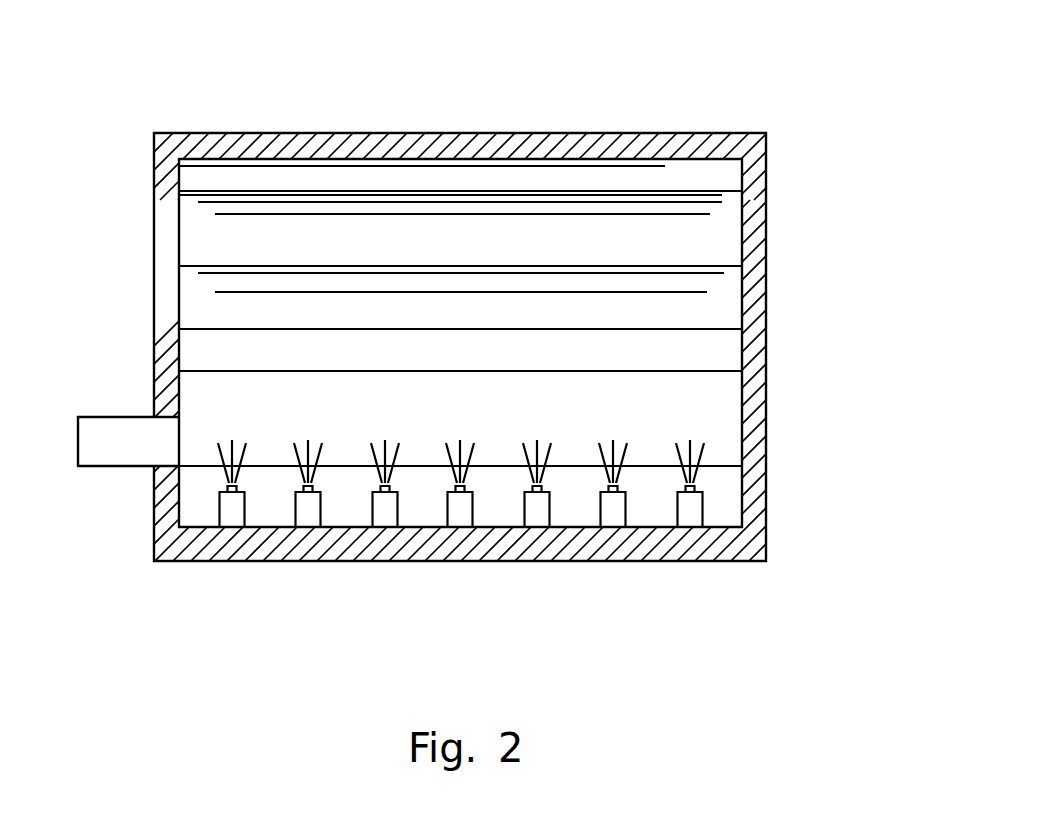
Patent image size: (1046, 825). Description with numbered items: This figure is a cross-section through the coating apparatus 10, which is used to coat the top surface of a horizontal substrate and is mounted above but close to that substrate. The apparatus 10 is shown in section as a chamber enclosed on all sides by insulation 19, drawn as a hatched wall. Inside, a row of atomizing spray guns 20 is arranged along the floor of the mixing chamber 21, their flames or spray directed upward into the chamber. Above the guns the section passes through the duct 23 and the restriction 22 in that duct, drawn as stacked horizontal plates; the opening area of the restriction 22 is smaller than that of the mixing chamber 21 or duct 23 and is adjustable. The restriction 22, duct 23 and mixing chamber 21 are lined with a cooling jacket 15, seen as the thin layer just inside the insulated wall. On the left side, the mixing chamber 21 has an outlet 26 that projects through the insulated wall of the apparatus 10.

The coating apparatus 10 is at (212, 80).
The cooling jacket 15 is at (514, 160).
The insulation 19 is at (722, 148).
The atomizing spray guns 20 is at (690, 508).
The mixing chamber 21 is at (697, 408).
The restriction 22 is at (700, 277).
The duct 23 is at (645, 175).
The outlet 26 is at (130, 417).